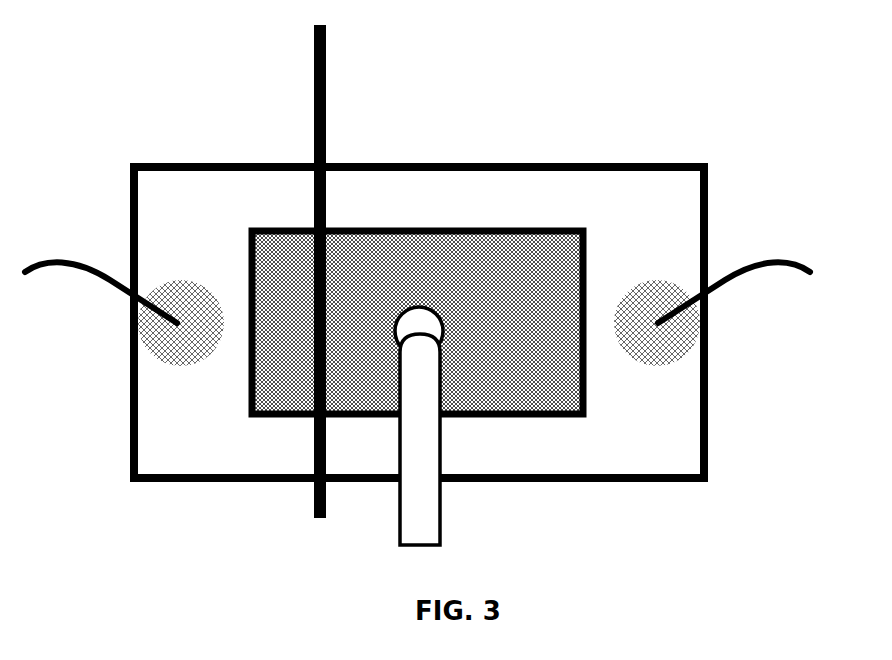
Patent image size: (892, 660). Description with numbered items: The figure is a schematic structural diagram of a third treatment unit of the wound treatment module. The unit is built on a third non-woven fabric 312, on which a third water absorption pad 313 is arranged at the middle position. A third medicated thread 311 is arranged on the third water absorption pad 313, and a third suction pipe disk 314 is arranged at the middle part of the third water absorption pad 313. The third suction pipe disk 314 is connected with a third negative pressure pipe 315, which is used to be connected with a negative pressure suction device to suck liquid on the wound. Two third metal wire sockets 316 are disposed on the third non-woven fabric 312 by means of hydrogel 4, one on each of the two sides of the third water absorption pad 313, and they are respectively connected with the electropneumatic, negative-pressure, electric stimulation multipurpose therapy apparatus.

The hydrogel 4 is at (180, 350).
The third medicated thread 311 is at (328, 115).
The third non-woven fabric 312 is at (502, 165).
The third water absorption pad 313 is at (540, 273).
The third suction pipe disk 314 is at (427, 323).
The third negative pressure pipe 315 is at (423, 485).
The third metal wire socket 316 is at (57, 255).